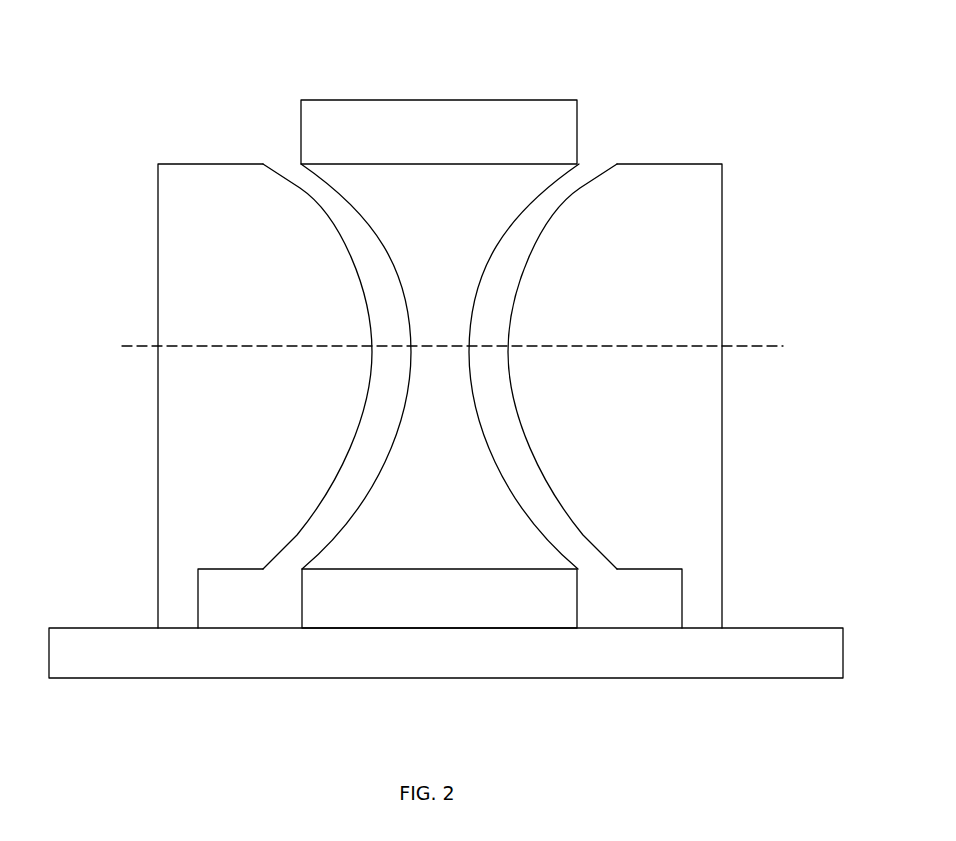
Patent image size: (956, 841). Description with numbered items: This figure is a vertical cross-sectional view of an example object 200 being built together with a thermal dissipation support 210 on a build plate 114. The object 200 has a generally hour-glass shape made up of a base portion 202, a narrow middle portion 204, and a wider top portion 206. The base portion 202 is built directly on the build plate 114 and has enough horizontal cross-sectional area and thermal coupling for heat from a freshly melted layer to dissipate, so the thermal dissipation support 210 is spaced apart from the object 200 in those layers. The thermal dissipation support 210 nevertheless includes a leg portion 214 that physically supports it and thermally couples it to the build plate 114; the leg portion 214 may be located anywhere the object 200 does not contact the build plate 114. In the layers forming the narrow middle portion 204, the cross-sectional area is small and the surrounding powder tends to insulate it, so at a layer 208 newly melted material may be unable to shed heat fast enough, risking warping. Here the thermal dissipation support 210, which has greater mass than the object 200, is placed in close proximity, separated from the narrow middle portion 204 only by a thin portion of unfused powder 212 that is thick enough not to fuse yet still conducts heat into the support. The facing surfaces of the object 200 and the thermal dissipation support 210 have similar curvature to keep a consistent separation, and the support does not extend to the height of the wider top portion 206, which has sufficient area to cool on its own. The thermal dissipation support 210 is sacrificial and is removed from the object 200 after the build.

The object 200 is at (434, 90).
The wider top portion 206 is at (420, 144).
The thermal dissipation support 210 is at (158, 188).
The unfused powder 212 is at (299, 176).
The narrow middle portion 204 is at (422, 321).
The layer 208 is at (745, 346).
The base portion 202 is at (419, 609).
The leg portion 214 is at (158, 583).
The build plate 114 is at (130, 628).